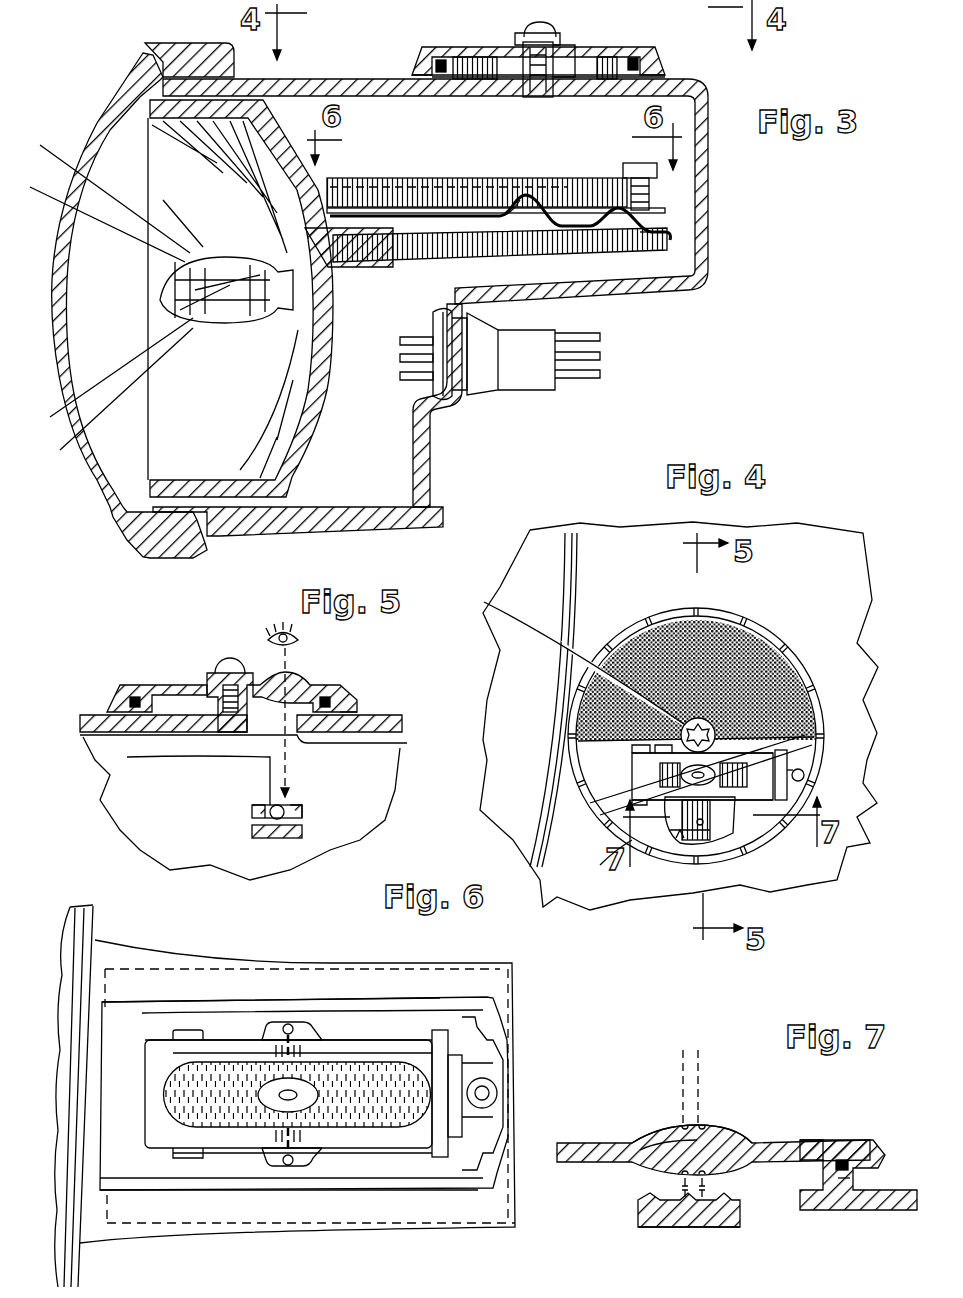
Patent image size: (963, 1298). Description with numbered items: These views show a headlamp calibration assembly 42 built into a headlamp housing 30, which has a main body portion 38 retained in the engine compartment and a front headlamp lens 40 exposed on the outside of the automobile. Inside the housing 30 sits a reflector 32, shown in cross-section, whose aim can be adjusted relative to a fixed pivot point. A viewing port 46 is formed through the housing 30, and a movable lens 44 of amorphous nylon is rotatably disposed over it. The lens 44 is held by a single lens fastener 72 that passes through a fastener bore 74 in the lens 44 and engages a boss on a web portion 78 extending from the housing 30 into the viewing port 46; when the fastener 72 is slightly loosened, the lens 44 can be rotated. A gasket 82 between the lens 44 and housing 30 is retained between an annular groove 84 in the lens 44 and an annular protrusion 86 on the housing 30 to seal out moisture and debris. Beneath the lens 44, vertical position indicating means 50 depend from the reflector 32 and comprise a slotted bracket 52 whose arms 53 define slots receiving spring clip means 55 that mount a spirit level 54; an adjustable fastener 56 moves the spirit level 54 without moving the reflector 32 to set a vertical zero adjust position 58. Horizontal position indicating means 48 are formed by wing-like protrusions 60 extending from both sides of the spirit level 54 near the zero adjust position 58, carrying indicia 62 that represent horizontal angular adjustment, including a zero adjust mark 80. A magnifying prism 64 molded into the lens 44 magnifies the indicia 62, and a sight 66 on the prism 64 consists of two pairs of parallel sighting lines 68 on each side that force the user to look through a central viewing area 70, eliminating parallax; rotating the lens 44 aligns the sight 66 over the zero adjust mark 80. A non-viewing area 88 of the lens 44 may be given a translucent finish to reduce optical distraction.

In FIG. 3, the housing 30 is at (163, 33).
In FIG. 3, the reflector 32 is at (320, 387).
In FIG. 3, the main body portion 38 is at (708, 213).
In FIG. 4, the main body portion 38 is at (830, 555).
In FIG. 5, the main body portion 38 is at (402, 723).
In FIG. 7, the main body portion 38 is at (895, 1190).
In FIG. 3, the front headlamp lens 40 is at (92, 107).
In FIG. 3, the headlamp calibration assembly 42 is at (640, 33).
In FIG. 4, the headlamp calibration assembly 42 is at (787, 840).
In FIG. 5, the headlamp calibration assembly 42 is at (200, 652).
In FIG. 3, the movable lens 44 is at (443, 50).
In FIG. 4, the movable lens 44 is at (810, 642).
In FIG. 5, the movable lens 44 is at (140, 685).
In FIG. 7, the movable lens 44 is at (598, 1143).
In FIG. 3, the viewing port 46 is at (470, 83).
In FIG. 5, the viewing port 46 is at (370, 747).
In FIG. 4, the horizontal position indicating means 48 is at (680, 827).
In FIG. 6, the horizontal position indicating means 48 is at (310, 1150).
In FIG. 7, the horizontal position indicating means 48 is at (653, 1192).
In FIG. 3, the vertical position indicating means 50 is at (512, 168).
In FIG. 4, the vertical position indicating means 50 is at (753, 807).
In FIG. 5, the vertical position indicating means 50 is at (243, 807).
In FIG. 6, the vertical position indicating means 50 is at (402, 1010).
In FIG. 3, the bracket 52 is at (363, 185).
In FIG. 4, the bracket 52 is at (653, 830).
In FIG. 5, the bracket 52 is at (250, 833).
In FIG. 6, the bracket 52 is at (160, 980).
In FIG. 3, the arms 53 is at (587, 247).
In FIG. 4, the arms 53 is at (781, 775).
In FIG. 6, the arms 53 is at (432, 1020).
In FIG. 3, the spirit level 54 is at (587, 177).
In FIG. 4, the spirit level 54 is at (600, 865).
In FIG. 5, the spirit level 54 is at (127, 757).
In FIG. 6, the spirit level 54 is at (370, 1037).
In FIG. 3, the spring clip means 55 is at (537, 222).
In FIG. 3, the adjustable fastener 56 is at (657, 170).
In FIG. 6, the adjustable fastener 56 is at (492, 1090).
In FIG. 4, the vertical zero adjust position 58 is at (805, 746).
In FIG. 4, the protrusions 60 is at (743, 807).
In FIG. 6, the protrusions 60 is at (328, 1023).
In FIG. 4, the indicia 62 is at (733, 817).
In FIG. 6, the indicia 62 is at (270, 1150).
In FIG. 7, the indicia 62 is at (748, 1203).
In FIG. 4, the magnifying prism 64 is at (685, 853).
In FIG. 7, the magnifying prism 64 is at (732, 1122).
In FIG. 7, the sight 66 is at (680, 1120).
In FIG. 7, the sighting lines 68 is at (683, 1120).
In FIG. 7, the central viewing area 70 is at (657, 1140).
In FIG. 3, the lens fastener 72 is at (477, 47).
In FIG. 4, the lens fastener 72 is at (587, 669).
In FIG. 3, the fastener bore 74 is at (537, 24).
In FIG. 3, the web portion 78 is at (576, 72).
In FIG. 4, the web portion 78 is at (822, 728).
In FIG. 4, the zero adjust mark 80 is at (700, 825).
In FIG. 6, the zero adjust mark 80 is at (272, 1023).
In FIG. 3, the gasket 82 is at (628, 63).
In FIG. 5, the gasket 82 is at (333, 698).
In FIG. 7, the gasket 82 is at (850, 1160).
In FIG. 5, the annular groove 84 is at (317, 683).
In FIG. 7, the annular groove 84 is at (800, 1160).
In FIG. 5, the annular protrusion 86 is at (357, 705).
In FIG. 7, the annular protrusion 86 is at (842, 1183).
In FIG. 4, the non-viewing area 88 is at (640, 647).